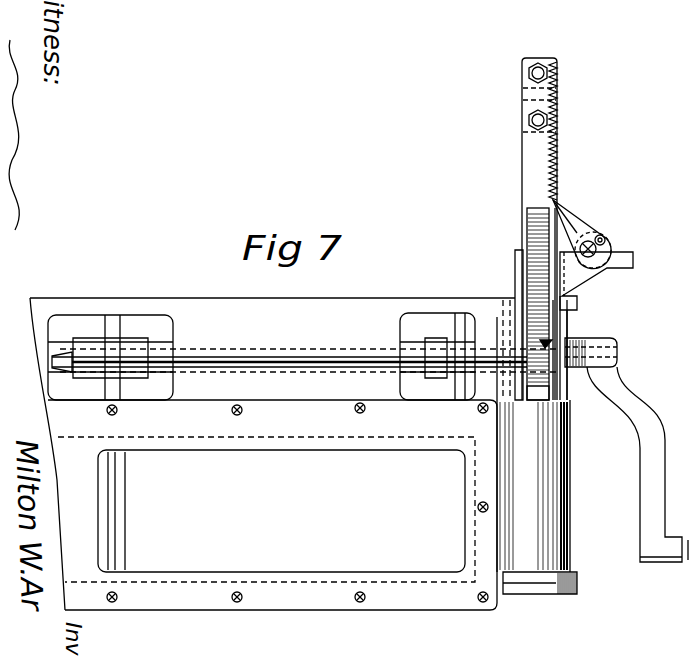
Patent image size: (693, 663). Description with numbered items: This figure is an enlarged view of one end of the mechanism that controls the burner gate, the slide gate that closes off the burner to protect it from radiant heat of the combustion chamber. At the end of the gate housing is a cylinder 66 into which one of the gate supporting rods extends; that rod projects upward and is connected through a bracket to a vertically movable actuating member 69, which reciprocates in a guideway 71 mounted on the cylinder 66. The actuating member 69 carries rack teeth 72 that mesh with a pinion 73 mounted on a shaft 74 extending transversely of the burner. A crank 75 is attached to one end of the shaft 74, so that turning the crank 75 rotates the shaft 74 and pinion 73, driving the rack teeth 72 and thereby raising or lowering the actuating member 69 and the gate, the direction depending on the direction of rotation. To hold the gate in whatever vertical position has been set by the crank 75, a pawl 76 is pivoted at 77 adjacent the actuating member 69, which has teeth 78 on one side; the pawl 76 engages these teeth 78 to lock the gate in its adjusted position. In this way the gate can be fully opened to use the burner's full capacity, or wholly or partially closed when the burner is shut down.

The cylinder 66 is at (568, 468).
The actuating member 69 is at (522, 163).
The guideway 71 is at (289, 377).
The rack teeth 72 is at (535, 275).
The pinion 73 is at (550, 345).
The shaft 74 is at (296, 353).
The crank 75 is at (645, 503).
The pawl 76 is at (567, 213).
The pivot 77 is at (610, 247).
The teeth 78 is at (558, 160).